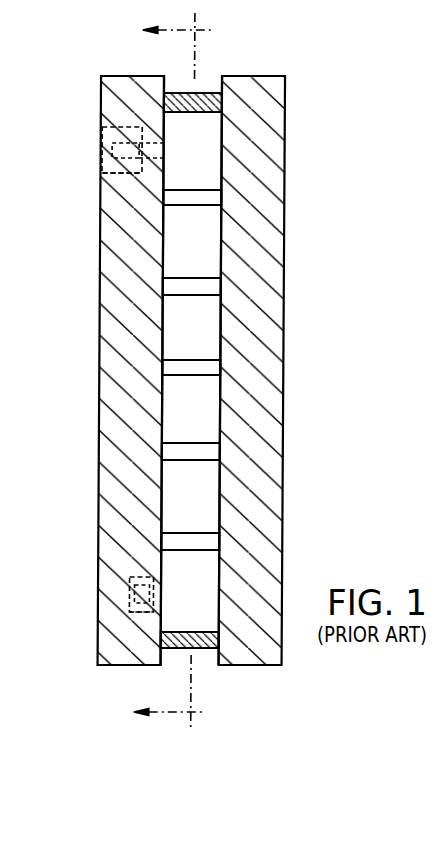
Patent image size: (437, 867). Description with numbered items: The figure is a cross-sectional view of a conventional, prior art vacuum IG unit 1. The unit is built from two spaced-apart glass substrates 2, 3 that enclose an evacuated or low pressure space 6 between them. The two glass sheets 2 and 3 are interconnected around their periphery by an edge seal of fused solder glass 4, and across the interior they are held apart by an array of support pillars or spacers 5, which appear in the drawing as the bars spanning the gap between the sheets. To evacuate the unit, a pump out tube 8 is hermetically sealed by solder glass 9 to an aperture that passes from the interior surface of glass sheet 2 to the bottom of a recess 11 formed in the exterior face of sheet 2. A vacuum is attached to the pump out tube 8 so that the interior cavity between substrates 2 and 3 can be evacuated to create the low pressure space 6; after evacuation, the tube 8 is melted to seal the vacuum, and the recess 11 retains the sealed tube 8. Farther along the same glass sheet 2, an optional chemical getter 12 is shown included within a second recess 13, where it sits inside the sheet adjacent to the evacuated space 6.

The vacuum IG unit 1 is at (206, 379).
The glass substrate 2 is at (101, 415).
The glass substrate 3 is at (257, 308).
The peripheral edge seal of fused solder glass 4 is at (205, 102).
The support pillars or spacers 5 is at (198, 545).
The evacuated or low pressure space 6 is at (177, 483).
The pump out tube 8 is at (111, 153).
The solder glass 9 is at (132, 138).
The recess 11 is at (115, 176).
The chemical getter 12 is at (133, 588).
The recess 13 is at (138, 617).